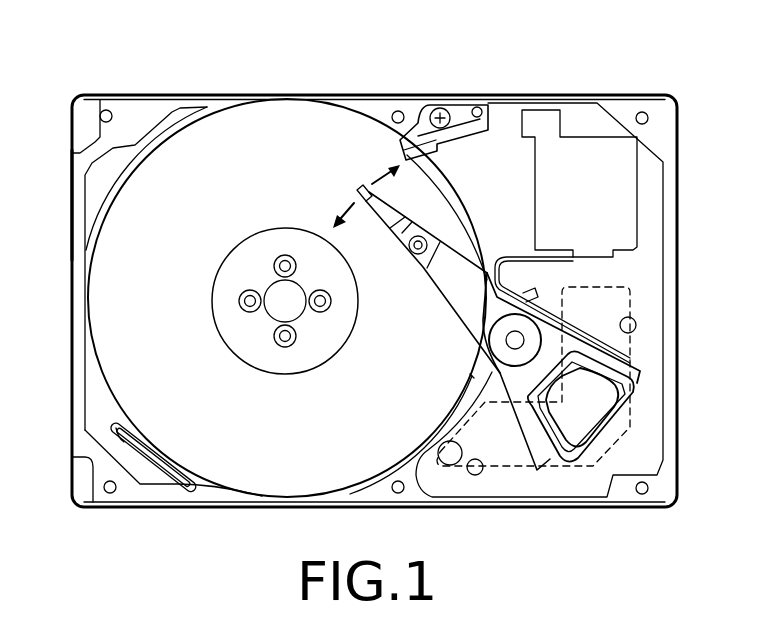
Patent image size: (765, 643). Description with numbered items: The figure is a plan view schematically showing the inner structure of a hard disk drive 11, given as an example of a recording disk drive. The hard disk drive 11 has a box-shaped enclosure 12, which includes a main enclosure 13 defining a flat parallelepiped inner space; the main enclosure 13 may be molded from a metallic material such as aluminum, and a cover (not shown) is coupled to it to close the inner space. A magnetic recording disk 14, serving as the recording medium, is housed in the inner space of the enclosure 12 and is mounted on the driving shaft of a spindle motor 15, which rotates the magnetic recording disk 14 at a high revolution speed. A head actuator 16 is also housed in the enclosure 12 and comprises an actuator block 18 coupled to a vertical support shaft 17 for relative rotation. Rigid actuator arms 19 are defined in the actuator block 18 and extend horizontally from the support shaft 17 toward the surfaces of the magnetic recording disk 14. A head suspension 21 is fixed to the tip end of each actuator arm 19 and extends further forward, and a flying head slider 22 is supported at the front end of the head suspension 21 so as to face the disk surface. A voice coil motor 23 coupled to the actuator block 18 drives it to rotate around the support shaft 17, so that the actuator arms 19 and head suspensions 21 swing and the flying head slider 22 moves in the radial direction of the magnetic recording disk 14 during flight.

The hard disk drive 11 is at (167, 81).
The enclosure 12 is at (582, 94).
The main enclosure 13 is at (72, 203).
The magnetic recording disk 14 is at (89, 266).
The spindle motor 15 is at (285, 301).
The head actuator 16 is at (441, 238).
The vertical support shaft 17 is at (538, 330).
The actuator block 18 is at (470, 382).
The actuator arm 19 is at (452, 312).
The head suspension 21 is at (409, 250).
The flying head slider 22 is at (361, 188).
The voice coil motor 23 is at (633, 392).